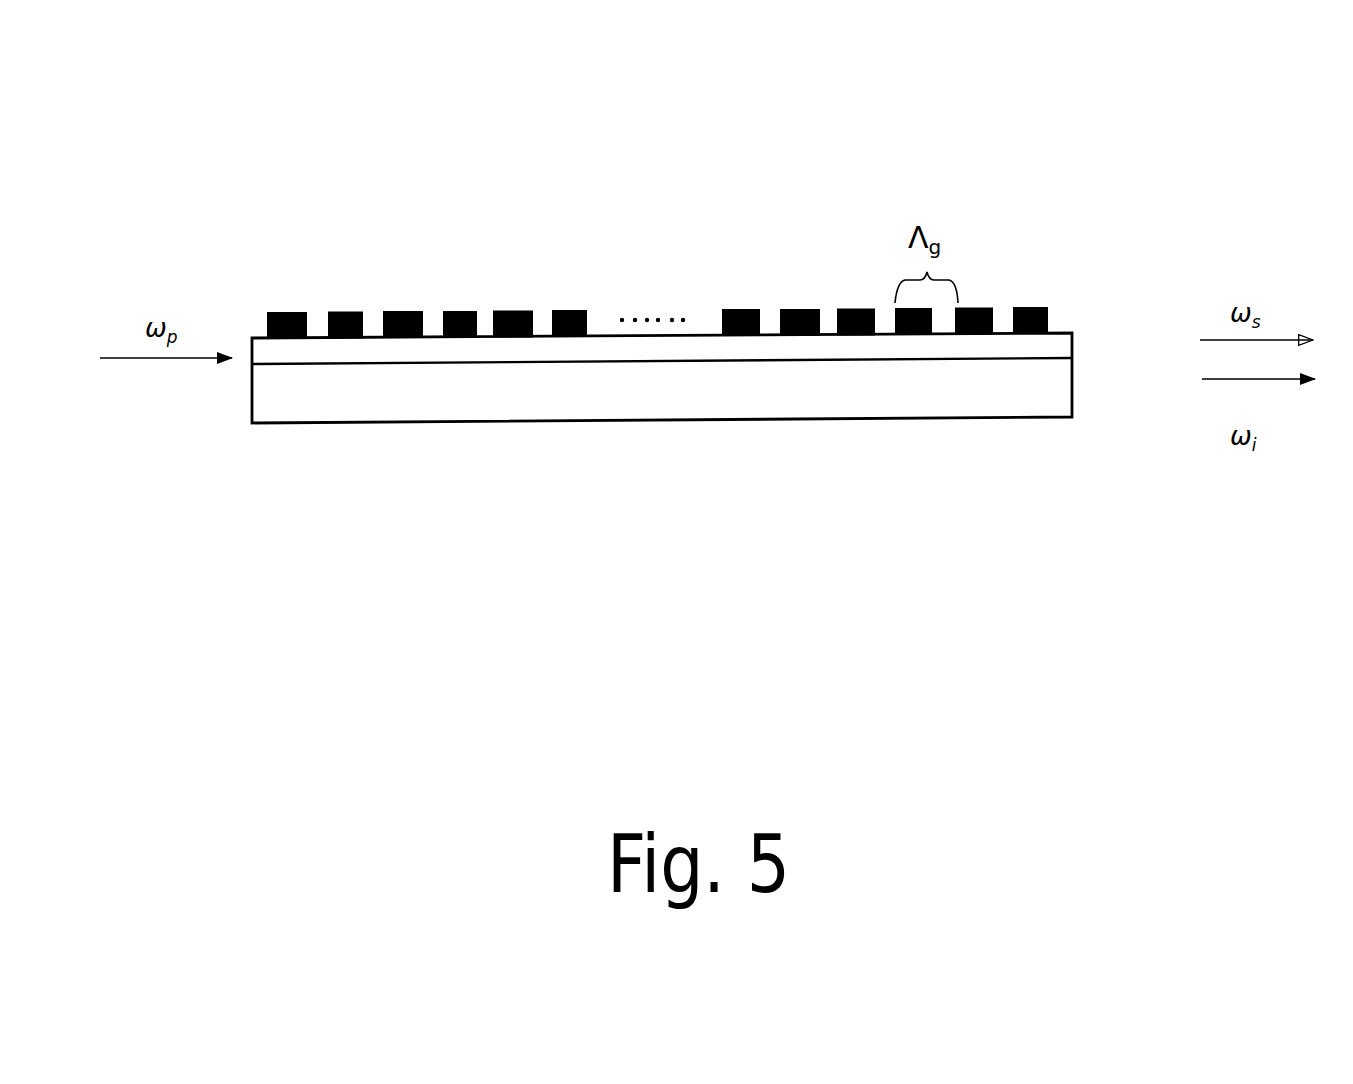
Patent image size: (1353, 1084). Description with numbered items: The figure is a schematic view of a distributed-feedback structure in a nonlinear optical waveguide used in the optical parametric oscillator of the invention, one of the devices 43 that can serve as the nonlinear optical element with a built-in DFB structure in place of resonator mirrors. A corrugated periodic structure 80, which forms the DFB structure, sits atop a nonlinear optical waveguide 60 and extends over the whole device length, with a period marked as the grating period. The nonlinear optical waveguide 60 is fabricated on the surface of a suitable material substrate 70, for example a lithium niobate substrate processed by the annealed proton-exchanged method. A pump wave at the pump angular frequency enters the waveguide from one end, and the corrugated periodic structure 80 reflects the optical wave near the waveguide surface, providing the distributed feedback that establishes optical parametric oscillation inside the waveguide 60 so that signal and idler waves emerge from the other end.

The nonlinear optical element with built-in DFB structure 43 is at (1072, 443).
The nonlinear optical waveguide 60 is at (627, 471).
The material substrate 70 is at (1082, 362).
The corrugated periodic structure 80 is at (623, 239).